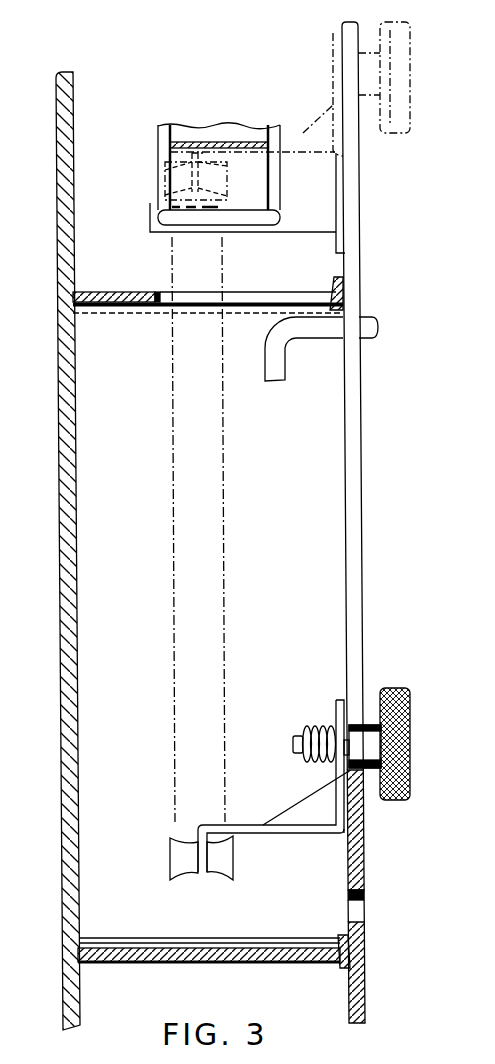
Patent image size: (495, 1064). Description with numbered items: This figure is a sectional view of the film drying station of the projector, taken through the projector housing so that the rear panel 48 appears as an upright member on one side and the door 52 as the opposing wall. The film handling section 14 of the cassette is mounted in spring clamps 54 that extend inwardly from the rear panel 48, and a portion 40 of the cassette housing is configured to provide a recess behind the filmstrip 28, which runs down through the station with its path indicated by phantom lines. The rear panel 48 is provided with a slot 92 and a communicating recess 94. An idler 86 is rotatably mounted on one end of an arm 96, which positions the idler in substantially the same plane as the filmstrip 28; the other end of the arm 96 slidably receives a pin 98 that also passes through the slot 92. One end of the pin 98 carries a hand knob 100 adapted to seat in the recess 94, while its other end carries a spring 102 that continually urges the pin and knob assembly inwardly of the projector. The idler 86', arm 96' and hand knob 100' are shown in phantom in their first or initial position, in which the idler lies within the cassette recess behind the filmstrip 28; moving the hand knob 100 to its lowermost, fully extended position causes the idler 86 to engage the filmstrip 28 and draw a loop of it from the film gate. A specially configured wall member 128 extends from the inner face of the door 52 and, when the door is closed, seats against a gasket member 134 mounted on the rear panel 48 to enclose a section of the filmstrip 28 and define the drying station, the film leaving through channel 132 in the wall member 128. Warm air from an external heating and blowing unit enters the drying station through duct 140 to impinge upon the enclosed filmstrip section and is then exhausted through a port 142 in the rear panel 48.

The film handling section 14 is at (273, 142).
The filmstrip 28 is at (183, 506).
The portion of the housing 40 is at (168, 146).
The rear panel 48 is at (367, 975).
The door 52 is at (62, 452).
The spring clamps 54 is at (260, 233).
The idler 86 is at (178, 858).
The idler in first position 86' is at (169, 176).
The slot 92 is at (356, 532).
The recess 94 is at (357, 722).
The arm 96 is at (273, 788).
The arm in first position 96' is at (316, 110).
The pin 98 is at (350, 762).
The hand knob 100 is at (391, 768).
The hand knob in first position 100' is at (384, 101).
The spring 102 is at (317, 725).
The wall member 128 is at (116, 291).
The channel 132 is at (163, 308).
The gasket member 134 is at (333, 280).
The duct 140 is at (313, 333).
The port 142 is at (385, 906).